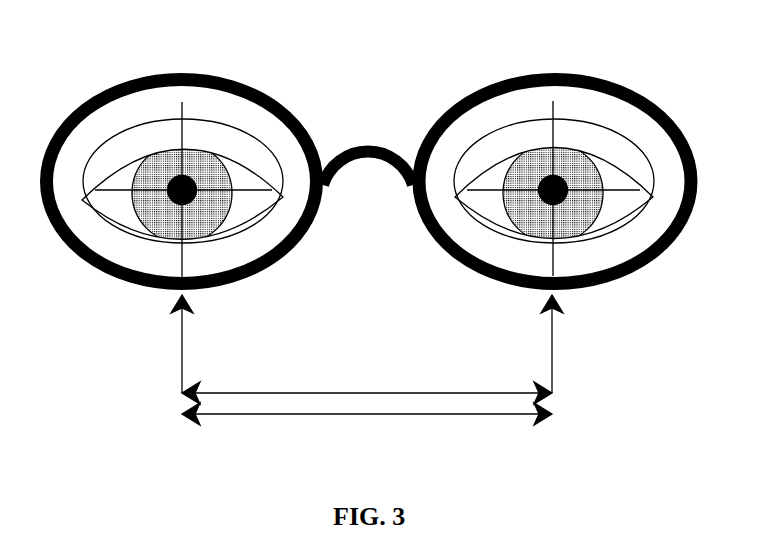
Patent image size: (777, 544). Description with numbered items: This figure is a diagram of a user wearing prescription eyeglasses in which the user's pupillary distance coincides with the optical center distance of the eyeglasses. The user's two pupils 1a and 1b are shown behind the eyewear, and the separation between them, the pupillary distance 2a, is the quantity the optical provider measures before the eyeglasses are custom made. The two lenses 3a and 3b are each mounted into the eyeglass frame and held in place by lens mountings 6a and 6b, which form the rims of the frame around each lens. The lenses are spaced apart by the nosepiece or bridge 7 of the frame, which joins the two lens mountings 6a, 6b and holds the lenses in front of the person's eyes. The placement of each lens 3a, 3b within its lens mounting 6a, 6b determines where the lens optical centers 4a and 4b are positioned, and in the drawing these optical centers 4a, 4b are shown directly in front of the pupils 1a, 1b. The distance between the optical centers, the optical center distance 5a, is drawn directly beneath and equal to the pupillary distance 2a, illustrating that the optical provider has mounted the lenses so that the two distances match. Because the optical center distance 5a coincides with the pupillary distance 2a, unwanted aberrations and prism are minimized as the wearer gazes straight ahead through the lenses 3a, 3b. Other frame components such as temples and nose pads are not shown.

The pupil 1a is at (159, 189).
The pupil 1b is at (581, 189).
The pupillary distance (PD) 2a is at (367, 349).
The lens 3a is at (152, 112).
The lens 3b is at (610, 112).
The lens optical center 4a is at (193, 178).
The lens optical center 4b is at (540, 173).
The optical center distance (OCD) 5a is at (367, 424).
The lens mounting 6a is at (210, 77).
The lens mounting 6b is at (535, 73).
The bridge 7 is at (355, 142).